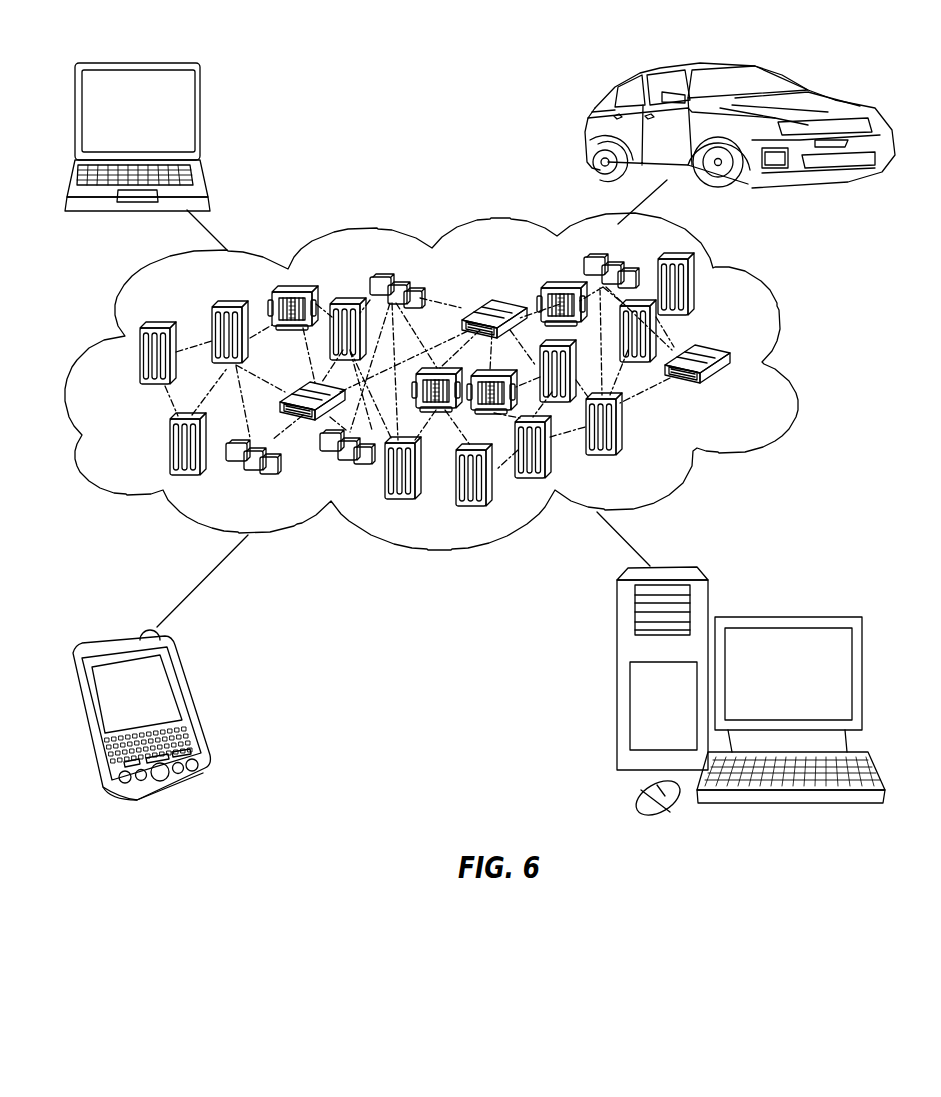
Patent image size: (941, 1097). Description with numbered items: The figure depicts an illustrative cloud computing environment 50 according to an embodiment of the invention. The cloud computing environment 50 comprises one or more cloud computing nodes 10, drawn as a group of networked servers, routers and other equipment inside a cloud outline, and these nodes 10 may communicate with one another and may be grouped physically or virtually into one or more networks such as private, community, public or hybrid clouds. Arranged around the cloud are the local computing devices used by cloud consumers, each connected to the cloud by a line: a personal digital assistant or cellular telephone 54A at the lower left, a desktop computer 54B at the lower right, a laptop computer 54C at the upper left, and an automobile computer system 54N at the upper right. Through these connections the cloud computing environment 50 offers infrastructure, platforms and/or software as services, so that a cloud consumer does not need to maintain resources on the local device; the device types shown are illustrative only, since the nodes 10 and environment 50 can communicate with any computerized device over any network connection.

The cloud computing nodes 10 is at (737, 389).
The cloud computing environment 50 is at (782, 358).
The personal digital assistant (PDA) or cellular telephone 54A is at (194, 702).
The desktop computer 54B is at (785, 615).
The laptop computer 54C is at (201, 122).
The automobile computer system 54N is at (587, 132).